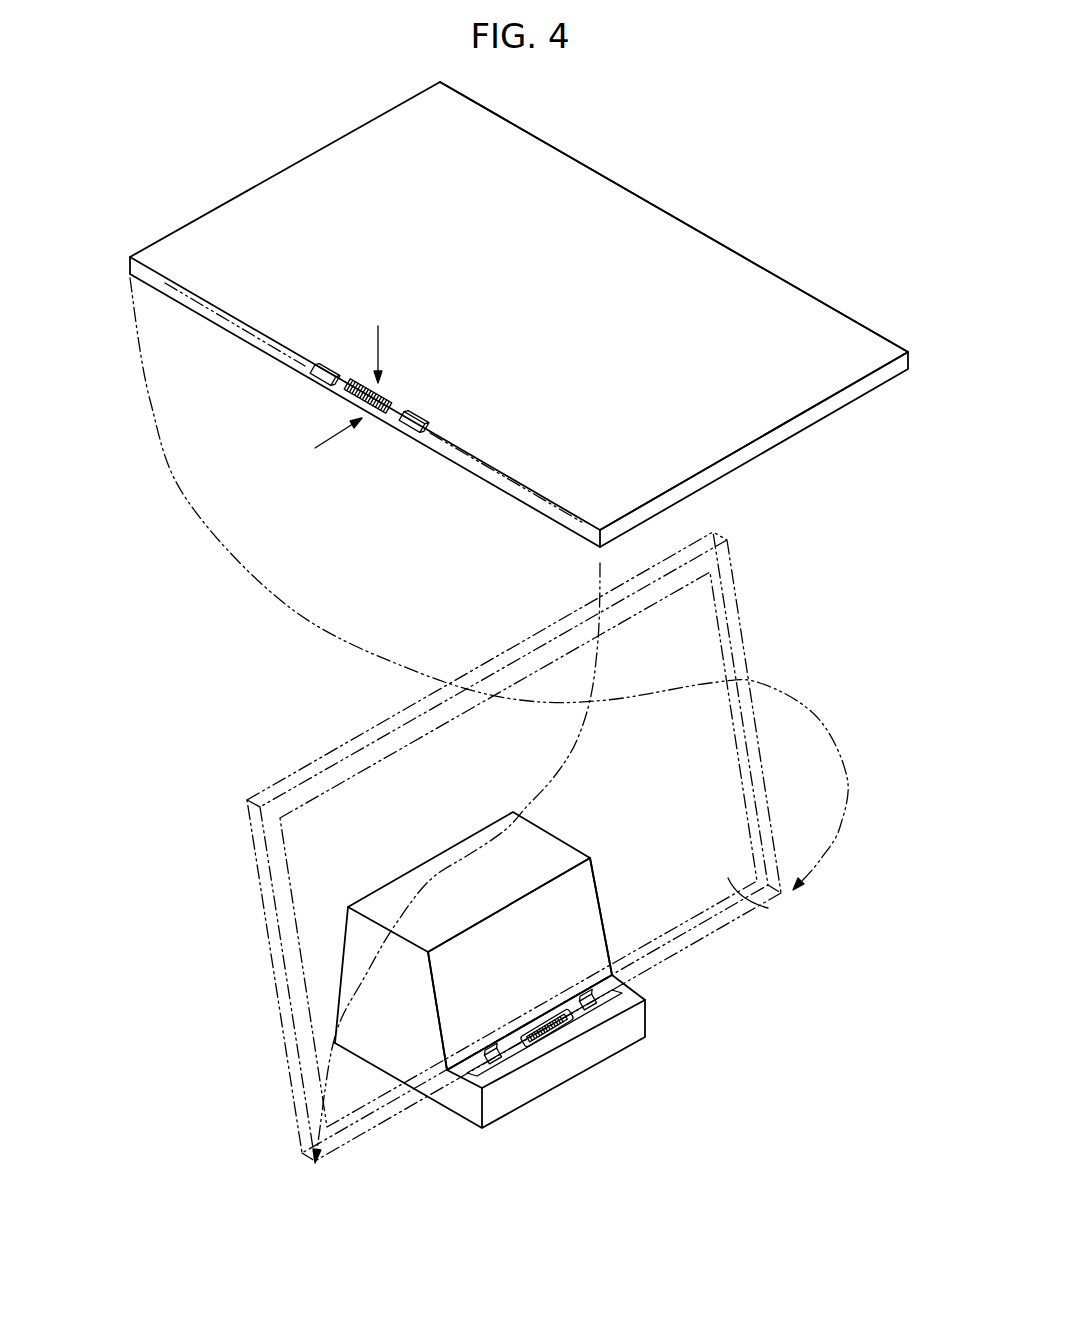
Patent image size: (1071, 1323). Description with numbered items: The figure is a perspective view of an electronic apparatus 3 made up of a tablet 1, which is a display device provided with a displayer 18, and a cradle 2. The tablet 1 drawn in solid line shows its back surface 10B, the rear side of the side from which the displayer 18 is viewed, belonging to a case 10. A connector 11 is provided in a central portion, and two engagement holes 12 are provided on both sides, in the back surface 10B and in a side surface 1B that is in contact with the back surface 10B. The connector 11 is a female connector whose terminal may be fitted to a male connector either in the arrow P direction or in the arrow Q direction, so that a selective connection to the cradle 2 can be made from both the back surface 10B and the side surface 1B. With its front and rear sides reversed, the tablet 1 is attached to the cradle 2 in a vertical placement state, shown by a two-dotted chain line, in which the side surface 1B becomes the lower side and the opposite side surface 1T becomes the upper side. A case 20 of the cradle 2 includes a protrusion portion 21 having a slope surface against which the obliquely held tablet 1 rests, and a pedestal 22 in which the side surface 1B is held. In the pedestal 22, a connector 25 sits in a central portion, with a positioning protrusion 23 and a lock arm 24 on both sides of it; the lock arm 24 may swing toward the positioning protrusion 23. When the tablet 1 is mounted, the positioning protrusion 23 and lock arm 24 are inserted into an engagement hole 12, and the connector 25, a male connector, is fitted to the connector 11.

The tablet 1 is at (645, 195).
The side surface 1T is at (730, 246).
The side surface 1B is at (256, 336).
The cradle 2 is at (660, 1013).
The electronic apparatus 3 is at (800, 175).
The case 10 is at (318, 178).
The back surface 10B is at (553, 165).
The connector 11 is at (350, 403).
The engagement holes 12 is at (415, 428).
The displayer 18 is at (775, 915).
The case 20 is at (556, 838).
The protrusion portion 21 is at (592, 913).
The pedestal 22 is at (640, 995).
The positioning protrusion 23 is at (590, 1010).
The lock arm 24 is at (620, 1003).
The connector 25 is at (542, 1035).
The arrow P direction P is at (329, 444).
The arrow Q direction Q is at (377, 341).